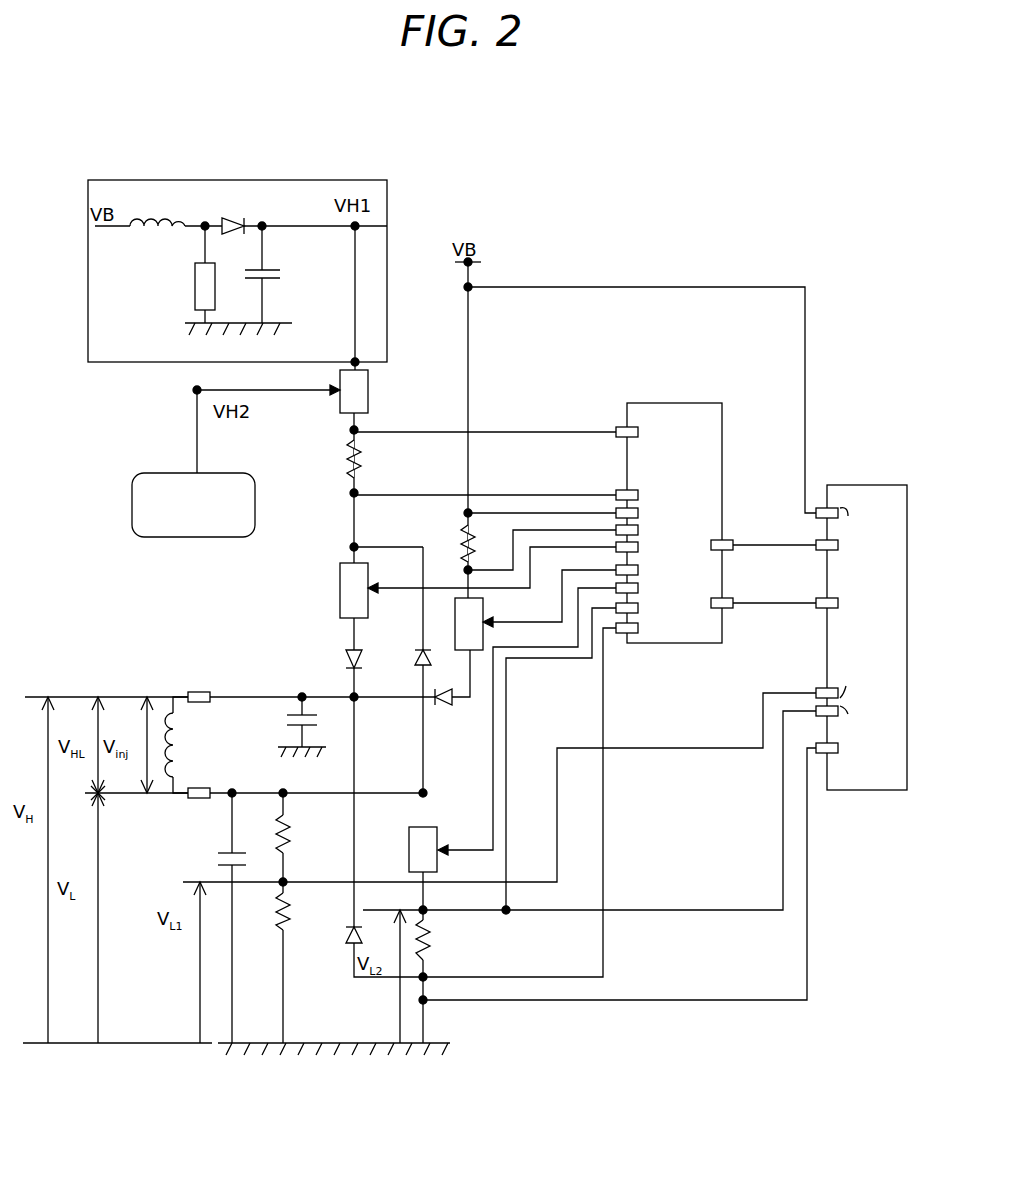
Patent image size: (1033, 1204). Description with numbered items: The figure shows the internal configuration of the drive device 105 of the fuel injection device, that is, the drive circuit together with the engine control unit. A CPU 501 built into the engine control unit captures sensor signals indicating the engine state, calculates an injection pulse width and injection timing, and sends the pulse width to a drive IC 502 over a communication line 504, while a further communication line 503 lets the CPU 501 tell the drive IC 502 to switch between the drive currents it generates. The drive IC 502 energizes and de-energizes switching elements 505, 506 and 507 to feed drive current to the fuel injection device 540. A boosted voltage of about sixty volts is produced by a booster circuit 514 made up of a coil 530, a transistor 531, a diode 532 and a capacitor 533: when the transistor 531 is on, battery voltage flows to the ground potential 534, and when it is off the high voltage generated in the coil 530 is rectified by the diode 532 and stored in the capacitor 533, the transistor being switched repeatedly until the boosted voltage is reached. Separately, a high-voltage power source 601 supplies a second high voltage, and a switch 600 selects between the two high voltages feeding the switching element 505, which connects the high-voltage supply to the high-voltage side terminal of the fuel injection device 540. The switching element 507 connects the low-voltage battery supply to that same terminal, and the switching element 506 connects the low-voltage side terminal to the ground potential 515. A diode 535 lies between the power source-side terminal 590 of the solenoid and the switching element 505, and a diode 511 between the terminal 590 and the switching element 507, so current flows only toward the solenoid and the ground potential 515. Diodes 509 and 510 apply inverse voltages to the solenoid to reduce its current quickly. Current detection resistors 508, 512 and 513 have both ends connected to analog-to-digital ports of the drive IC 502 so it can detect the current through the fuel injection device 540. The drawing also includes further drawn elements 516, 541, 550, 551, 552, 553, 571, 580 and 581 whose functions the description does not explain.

The drive device 105 is at (695, 202).
The booster circuit 514 is at (264, 182).
The coil 530 is at (156, 234).
The transistor 531 is at (194, 286).
The diode 532 is at (242, 218).
The capacitor 533 is at (278, 274).
The ground potential 534 is at (180, 329).
The high voltage VH1 line 516 is at (360, 236).
The switch 600 is at (369, 399).
The high-voltage power source 601 is at (132, 506).
The current detection resistor 512 is at (344, 456).
The current detection resistor 513 is at (462, 544).
The switching element 505 is at (340, 583).
The diode 510 is at (420, 656).
The diode 535 is at (345, 659).
The switching element 507 is at (486, 616).
The diode 511 is at (449, 705).
The drive IC 502 is at (674, 403).
The CPU 501 is at (850, 485).
The communication line 503 is at (768, 542).
The communication line 504 is at (762, 602).
The CPU input terminal 571 is at (838, 748).
The power source-side terminal 590 is at (192, 690).
The fuel injection device 540 is at (180, 752).
The capacitor 551 is at (286, 721).
The injector downstream terminal node 541 is at (424, 792).
The capacitor 550 is at (222, 856).
The resistor 552 is at (289, 832).
The voltage dividing node 581 is at (286, 882).
The resistor 553 is at (288, 922).
The diode 509 is at (352, 940).
The switching element 506 is at (432, 840).
The current detection node 580 is at (430, 912).
The current detection resistor 508 is at (434, 946).
The ground potential 515 is at (452, 1042).